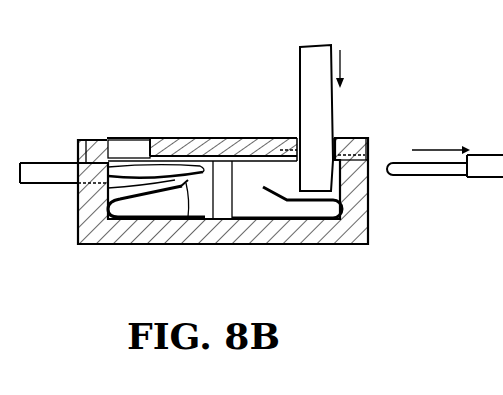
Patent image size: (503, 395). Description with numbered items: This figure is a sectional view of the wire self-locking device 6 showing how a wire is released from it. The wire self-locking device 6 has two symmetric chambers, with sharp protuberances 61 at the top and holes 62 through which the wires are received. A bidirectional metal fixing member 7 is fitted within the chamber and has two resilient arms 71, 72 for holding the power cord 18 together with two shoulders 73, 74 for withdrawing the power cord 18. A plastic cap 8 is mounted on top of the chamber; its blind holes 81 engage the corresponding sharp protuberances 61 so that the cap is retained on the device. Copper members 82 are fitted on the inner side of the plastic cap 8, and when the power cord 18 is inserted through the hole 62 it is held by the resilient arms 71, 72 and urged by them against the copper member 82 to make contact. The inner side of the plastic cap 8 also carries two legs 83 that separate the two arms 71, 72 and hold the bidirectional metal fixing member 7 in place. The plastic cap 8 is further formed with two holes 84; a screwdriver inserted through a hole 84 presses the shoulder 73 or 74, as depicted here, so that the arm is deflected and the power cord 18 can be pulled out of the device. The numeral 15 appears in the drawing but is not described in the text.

The wire self-locking device 6 is at (362, 221).
The bidirectional metal fixing member 7 is at (335, 244).
The plastic cap 8 is at (212, 138).
The actuating member 15 is at (0, 62).
The power cord 18 is at (43, 158).
The sharp protuberance 61 is at (223, 150).
The hole 62 is at (430, 207).
The resilient arm 71 is at (188, 217).
The resilient arm 72 is at (272, 192).
The shoulder 73 is at (108, 188).
The shoulder 74 is at (370, 156).
The blind hole 81 is at (86, 140).
The copper member 82 is at (260, 137).
The leg 83 is at (237, 220).
The hole 84 is at (122, 150).